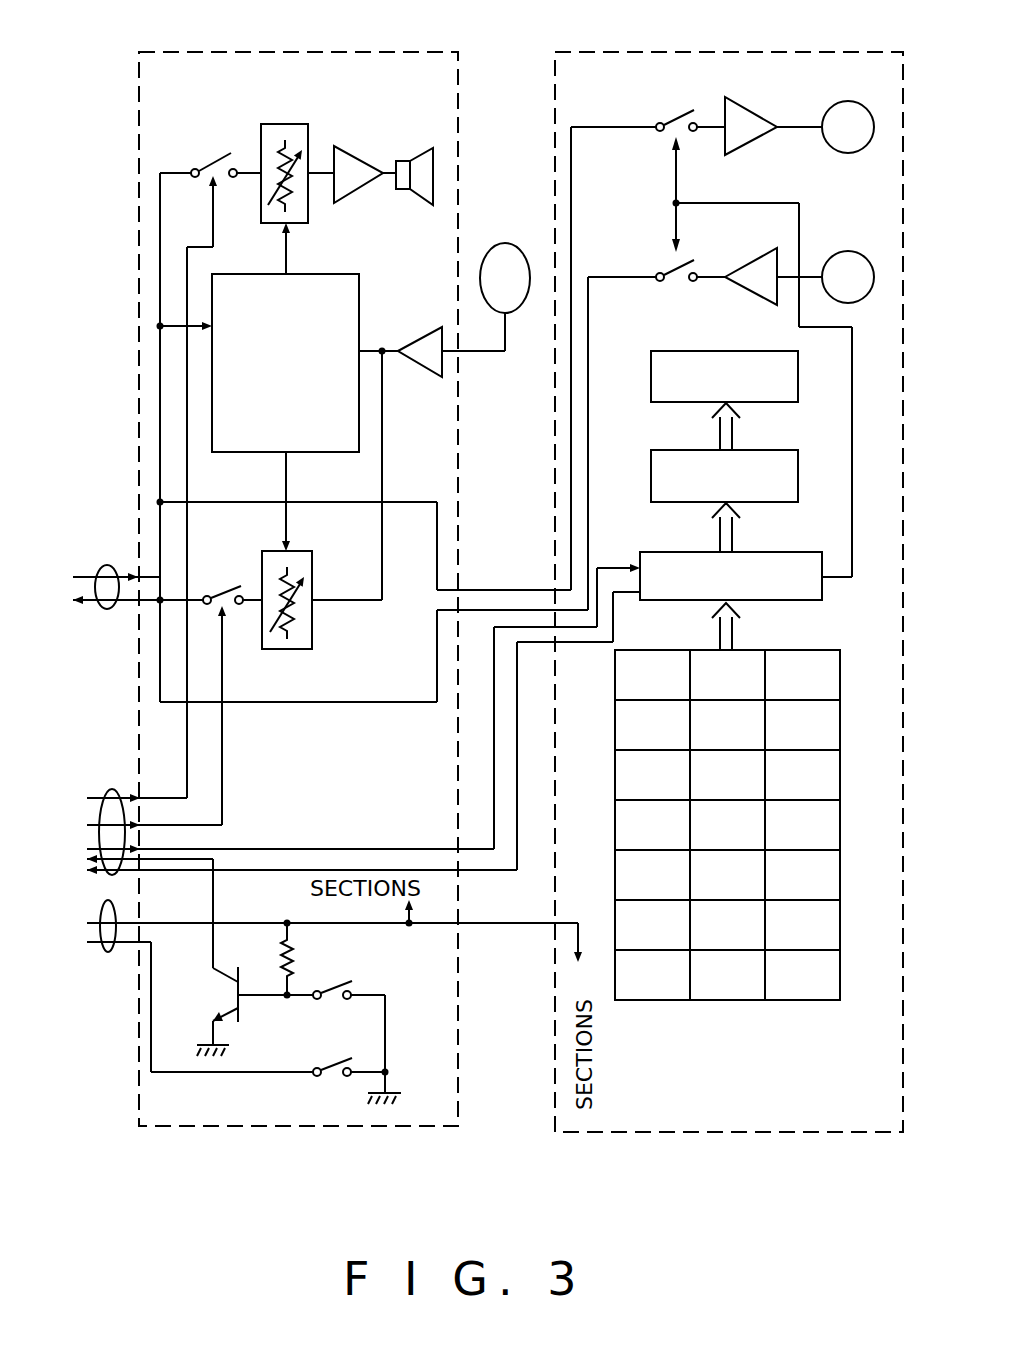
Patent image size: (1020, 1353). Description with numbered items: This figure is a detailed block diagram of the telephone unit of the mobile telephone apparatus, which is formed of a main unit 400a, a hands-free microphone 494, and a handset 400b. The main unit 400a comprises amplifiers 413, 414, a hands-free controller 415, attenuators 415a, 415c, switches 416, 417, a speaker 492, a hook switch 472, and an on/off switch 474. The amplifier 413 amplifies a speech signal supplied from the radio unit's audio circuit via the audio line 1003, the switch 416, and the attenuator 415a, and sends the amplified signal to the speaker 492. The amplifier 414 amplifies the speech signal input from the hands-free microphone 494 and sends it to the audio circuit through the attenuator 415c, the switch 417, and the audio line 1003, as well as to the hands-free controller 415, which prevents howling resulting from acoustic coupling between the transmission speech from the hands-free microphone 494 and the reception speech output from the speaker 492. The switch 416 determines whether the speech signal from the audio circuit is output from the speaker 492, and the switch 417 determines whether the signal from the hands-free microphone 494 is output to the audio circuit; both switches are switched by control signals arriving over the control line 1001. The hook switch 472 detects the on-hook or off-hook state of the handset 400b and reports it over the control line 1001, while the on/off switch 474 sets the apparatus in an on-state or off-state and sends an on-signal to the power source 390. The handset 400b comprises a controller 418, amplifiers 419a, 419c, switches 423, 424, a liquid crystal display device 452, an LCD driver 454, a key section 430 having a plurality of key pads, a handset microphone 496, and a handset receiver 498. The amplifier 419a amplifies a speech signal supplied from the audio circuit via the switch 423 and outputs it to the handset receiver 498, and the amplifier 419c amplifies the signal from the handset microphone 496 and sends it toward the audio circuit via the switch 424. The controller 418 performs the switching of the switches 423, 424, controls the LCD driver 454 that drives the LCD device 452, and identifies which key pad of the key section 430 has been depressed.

The main unit 400a is at (341, 51).
The handset 400b is at (737, 52).
The amplifier 413 is at (375, 152).
The amplifier 414 is at (402, 330).
The hands-free controller 415 is at (309, 274).
The attenuator 415a is at (296, 124).
The attenuator 415c is at (311, 551).
The switch 416 is at (204, 148).
The switch 417 is at (216, 590).
The controller 418 is at (762, 552).
The amplifier 419a is at (754, 106).
The amplifier 419c is at (752, 258).
The switch 423 is at (670, 118).
The switch 424 is at (660, 262).
The key section 430 is at (866, 631).
The liquid crystal display device 452 is at (696, 351).
The LCD driver 454 is at (766, 450).
The hook switch 472 is at (333, 988).
The on/off switch 474 is at (331, 1064).
The speaker 492 is at (414, 204).
The hands-free microphone 494 is at (509, 243).
The handset microphone 496 is at (850, 251).
The handset receiver 498 is at (850, 106).
The control line 1001 is at (106, 800).
The audio line 1003 is at (107, 609).
The power source 390 is at (108, 953).